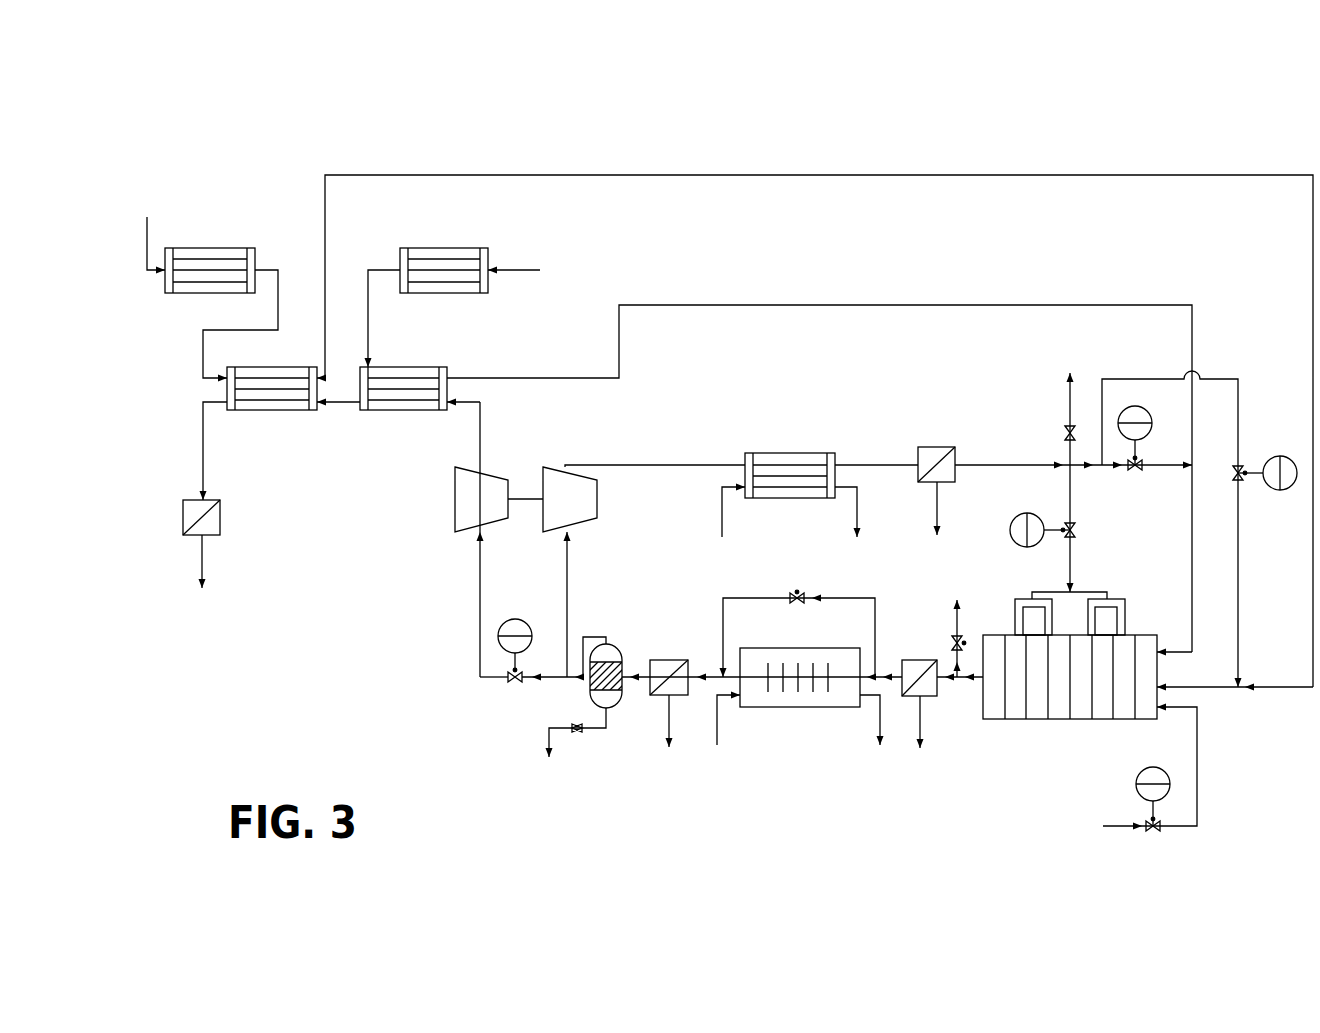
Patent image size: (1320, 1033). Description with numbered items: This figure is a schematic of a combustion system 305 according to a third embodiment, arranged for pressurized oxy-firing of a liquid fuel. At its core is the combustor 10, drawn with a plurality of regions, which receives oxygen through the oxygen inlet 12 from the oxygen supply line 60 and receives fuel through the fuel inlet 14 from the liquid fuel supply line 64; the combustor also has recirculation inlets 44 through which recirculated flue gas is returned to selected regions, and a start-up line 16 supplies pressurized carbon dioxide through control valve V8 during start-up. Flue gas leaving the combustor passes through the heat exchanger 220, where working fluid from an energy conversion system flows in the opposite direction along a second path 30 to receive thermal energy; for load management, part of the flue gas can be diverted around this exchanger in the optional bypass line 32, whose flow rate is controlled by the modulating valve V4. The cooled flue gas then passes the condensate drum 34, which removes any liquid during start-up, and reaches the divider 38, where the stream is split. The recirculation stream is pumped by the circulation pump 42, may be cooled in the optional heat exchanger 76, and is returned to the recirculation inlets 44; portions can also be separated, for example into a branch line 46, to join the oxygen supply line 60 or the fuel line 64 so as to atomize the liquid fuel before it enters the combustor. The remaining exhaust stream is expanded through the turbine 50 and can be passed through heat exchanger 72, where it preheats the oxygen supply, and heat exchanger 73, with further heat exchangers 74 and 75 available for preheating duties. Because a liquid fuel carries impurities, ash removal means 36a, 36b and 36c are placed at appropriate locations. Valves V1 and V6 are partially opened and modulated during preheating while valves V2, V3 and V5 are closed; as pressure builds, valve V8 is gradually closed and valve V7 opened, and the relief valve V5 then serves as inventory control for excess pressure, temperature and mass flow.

The combustion system 305 is at (536, 128).
The liquid fuel supply line 64 is at (764, 175).
The oxygen supply line 60 is at (743, 305).
The heat exchanger 75 is at (233, 248).
The heat exchanger 74 is at (447, 248).
The heat exchanger 73 is at (270, 413).
The heat exchanger 72 is at (380, 413).
The turbine 50 is at (453, 500).
The circulation pump 42 is at (600, 500).
The heat exchanger 76 is at (790, 453).
The ash removal means 36c is at (940, 447).
The valve V6 is at (1063, 433).
The valve V3 is at (1137, 470).
The recirculation branch line 46 is at (1240, 575).
The valve V7 is at (1243, 480).
The valve V2 is at (1075, 530).
The recirculation inlets 44 is at (1107, 597).
The combustor 10 is at (1070, 719).
The oxygen inlet 12 is at (1165, 648).
The fuel inlet 14 is at (1165, 683).
The start-up line 16 is at (1197, 765).
The control valve V8 is at (1145, 818).
The ash removal means 36a is at (937, 700).
The relief valve V5 is at (952, 640).
The heat exchanger 220 is at (795, 710).
The second path 30 is at (723, 700).
The bypass line 32 is at (723, 598).
The modulating valve V4 is at (795, 592).
The ash removal means 36b is at (672, 660).
The condensate drum 34 is at (612, 703).
The divider 38 is at (575, 672).
The valve V1 is at (515, 682).